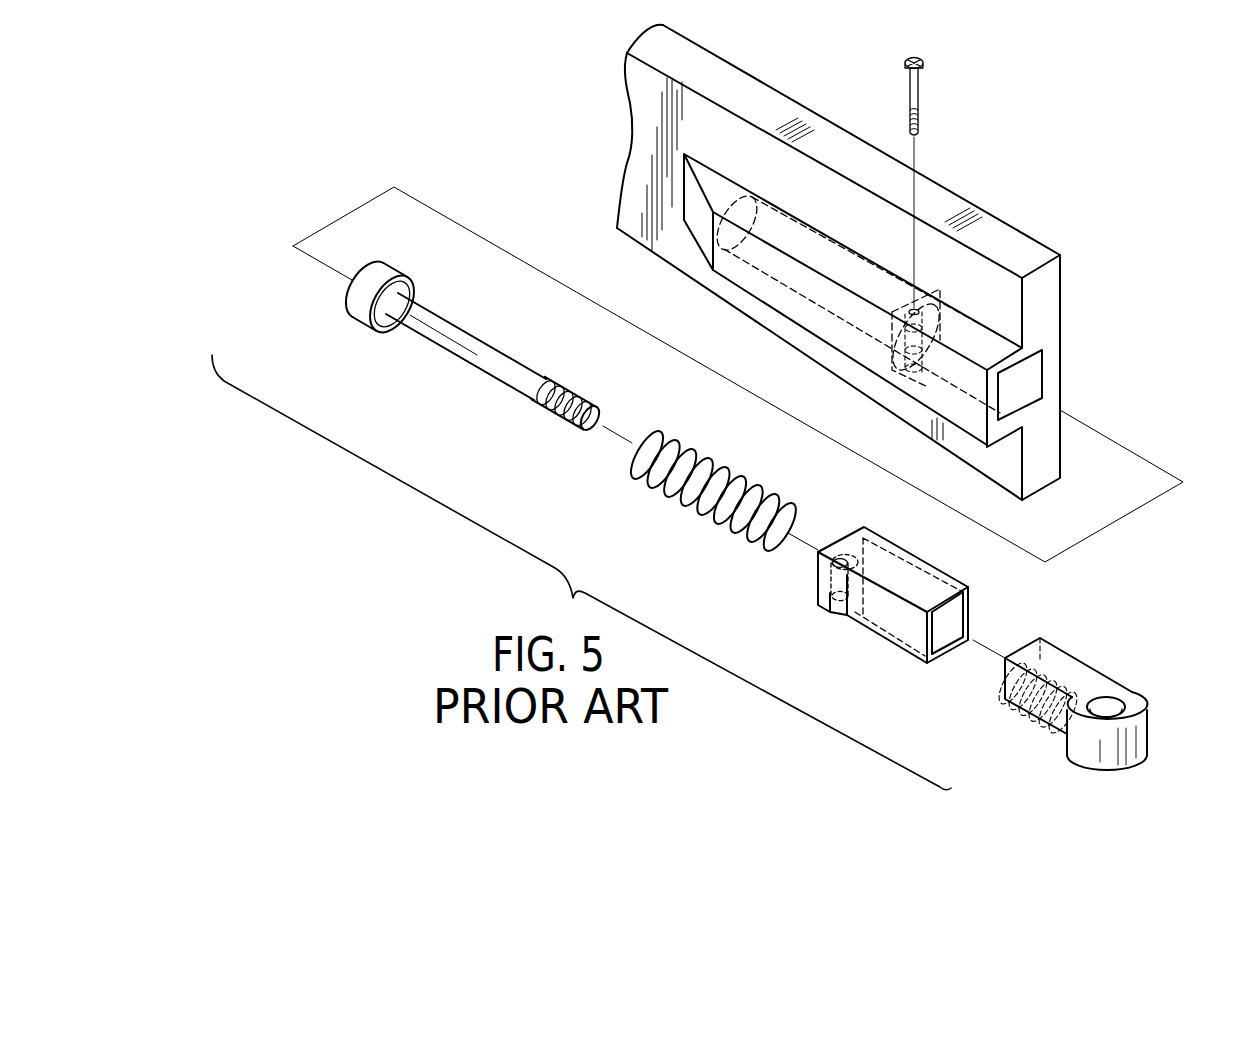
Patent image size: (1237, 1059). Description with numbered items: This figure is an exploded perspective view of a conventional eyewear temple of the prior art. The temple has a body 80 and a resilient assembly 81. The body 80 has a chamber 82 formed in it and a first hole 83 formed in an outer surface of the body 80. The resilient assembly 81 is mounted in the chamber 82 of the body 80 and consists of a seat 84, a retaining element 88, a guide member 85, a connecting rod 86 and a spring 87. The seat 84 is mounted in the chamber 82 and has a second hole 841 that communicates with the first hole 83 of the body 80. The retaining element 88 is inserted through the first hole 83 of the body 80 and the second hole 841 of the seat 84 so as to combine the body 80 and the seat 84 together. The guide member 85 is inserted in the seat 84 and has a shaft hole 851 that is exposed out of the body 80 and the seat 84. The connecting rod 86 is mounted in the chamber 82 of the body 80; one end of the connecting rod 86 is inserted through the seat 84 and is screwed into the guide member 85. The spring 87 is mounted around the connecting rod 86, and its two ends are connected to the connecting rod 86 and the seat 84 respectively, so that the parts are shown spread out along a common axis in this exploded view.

The body 80 is at (770, 104).
The resilient assembly 81 is at (866, 652).
The chamber 82 is at (955, 318).
The first hole 83 is at (917, 308).
The seat 84 is at (904, 574).
The second hole 841 is at (840, 560).
The guide member 85 is at (1102, 690).
The shaft hole 851 is at (1116, 706).
The connecting rod 86 is at (503, 367).
The spring 87 is at (718, 520).
The retaining element 88 is at (915, 88).